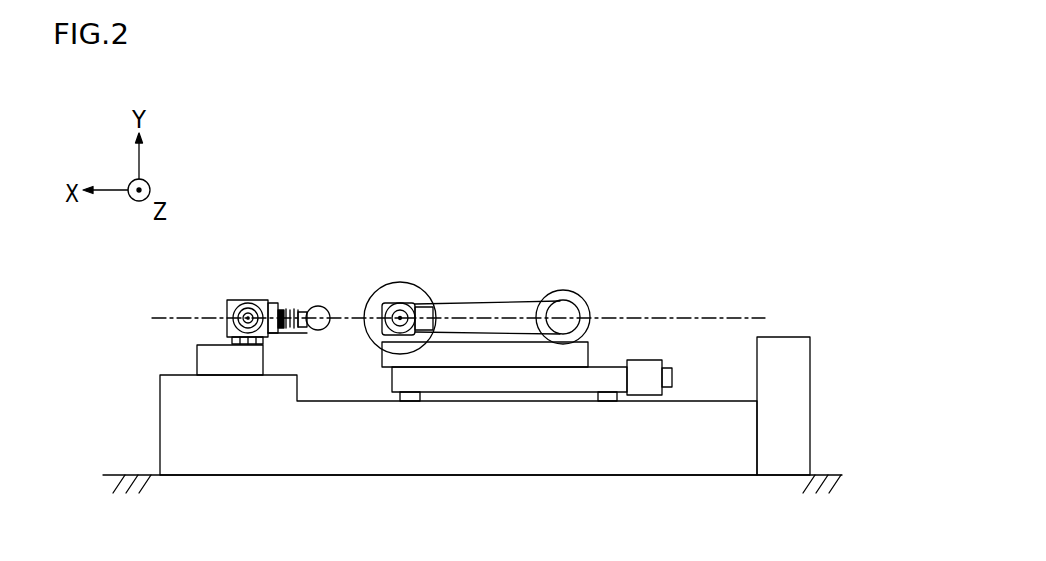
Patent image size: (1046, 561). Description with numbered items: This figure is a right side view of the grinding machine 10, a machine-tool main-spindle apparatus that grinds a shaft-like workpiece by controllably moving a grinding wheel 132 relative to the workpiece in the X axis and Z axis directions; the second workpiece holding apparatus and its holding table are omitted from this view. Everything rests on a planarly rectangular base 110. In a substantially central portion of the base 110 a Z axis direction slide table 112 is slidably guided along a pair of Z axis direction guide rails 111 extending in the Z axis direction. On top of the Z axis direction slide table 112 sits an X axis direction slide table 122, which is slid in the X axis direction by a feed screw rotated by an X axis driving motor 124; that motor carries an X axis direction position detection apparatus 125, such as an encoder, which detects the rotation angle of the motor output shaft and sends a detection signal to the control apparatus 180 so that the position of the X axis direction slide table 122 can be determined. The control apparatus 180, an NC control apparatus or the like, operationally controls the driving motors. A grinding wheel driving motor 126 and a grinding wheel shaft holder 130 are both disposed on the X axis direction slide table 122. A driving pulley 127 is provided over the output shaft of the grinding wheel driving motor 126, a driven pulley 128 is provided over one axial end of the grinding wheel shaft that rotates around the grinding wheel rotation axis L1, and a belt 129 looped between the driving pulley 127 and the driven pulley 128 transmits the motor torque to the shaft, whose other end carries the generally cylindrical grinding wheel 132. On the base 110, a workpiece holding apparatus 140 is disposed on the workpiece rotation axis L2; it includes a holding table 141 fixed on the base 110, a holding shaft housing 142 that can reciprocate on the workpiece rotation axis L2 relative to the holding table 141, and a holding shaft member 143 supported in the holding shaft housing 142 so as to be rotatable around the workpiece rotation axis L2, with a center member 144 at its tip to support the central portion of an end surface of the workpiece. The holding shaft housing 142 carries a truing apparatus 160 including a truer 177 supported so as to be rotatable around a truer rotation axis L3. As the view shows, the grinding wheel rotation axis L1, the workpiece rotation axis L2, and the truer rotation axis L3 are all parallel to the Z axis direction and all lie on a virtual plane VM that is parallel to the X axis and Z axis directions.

The grinding machine 10 is at (714, 230).
The base 110 is at (160, 440).
The Z axis direction guide rails 111 is at (415, 402).
The Z axis direction slide table 112 is at (605, 366).
The X axis direction slide table 122 is at (592, 343).
The X axis driving motor 124 is at (665, 362).
The X axis direction position detection apparatus 125 is at (667, 388).
The grinding wheel driving motor 126 is at (590, 307).
The driving pulley 127 is at (587, 297).
The driven pulley 128 is at (396, 330).
The belt 129 is at (487, 304).
The grinding wheel shaft holder 130 is at (392, 316).
The grinding wheel 132 is at (382, 342).
The workpiece holding apparatus 140 is at (190, 360).
The holding table 141 is at (228, 342).
The holding shaft housing 142 is at (243, 302).
The holding shaft member 143 is at (248, 302).
The center member 144 is at (247, 300).
The truing apparatus 160 is at (294, 286).
The truer 177 is at (318, 330).
The control apparatus 180 is at (780, 328).
The grinding wheel rotation axis L1 is at (402, 312).
The workpiece rotation axis L2 is at (247, 338).
The truer rotation axis L3 is at (328, 324).
The virtual plane VM is at (754, 312).